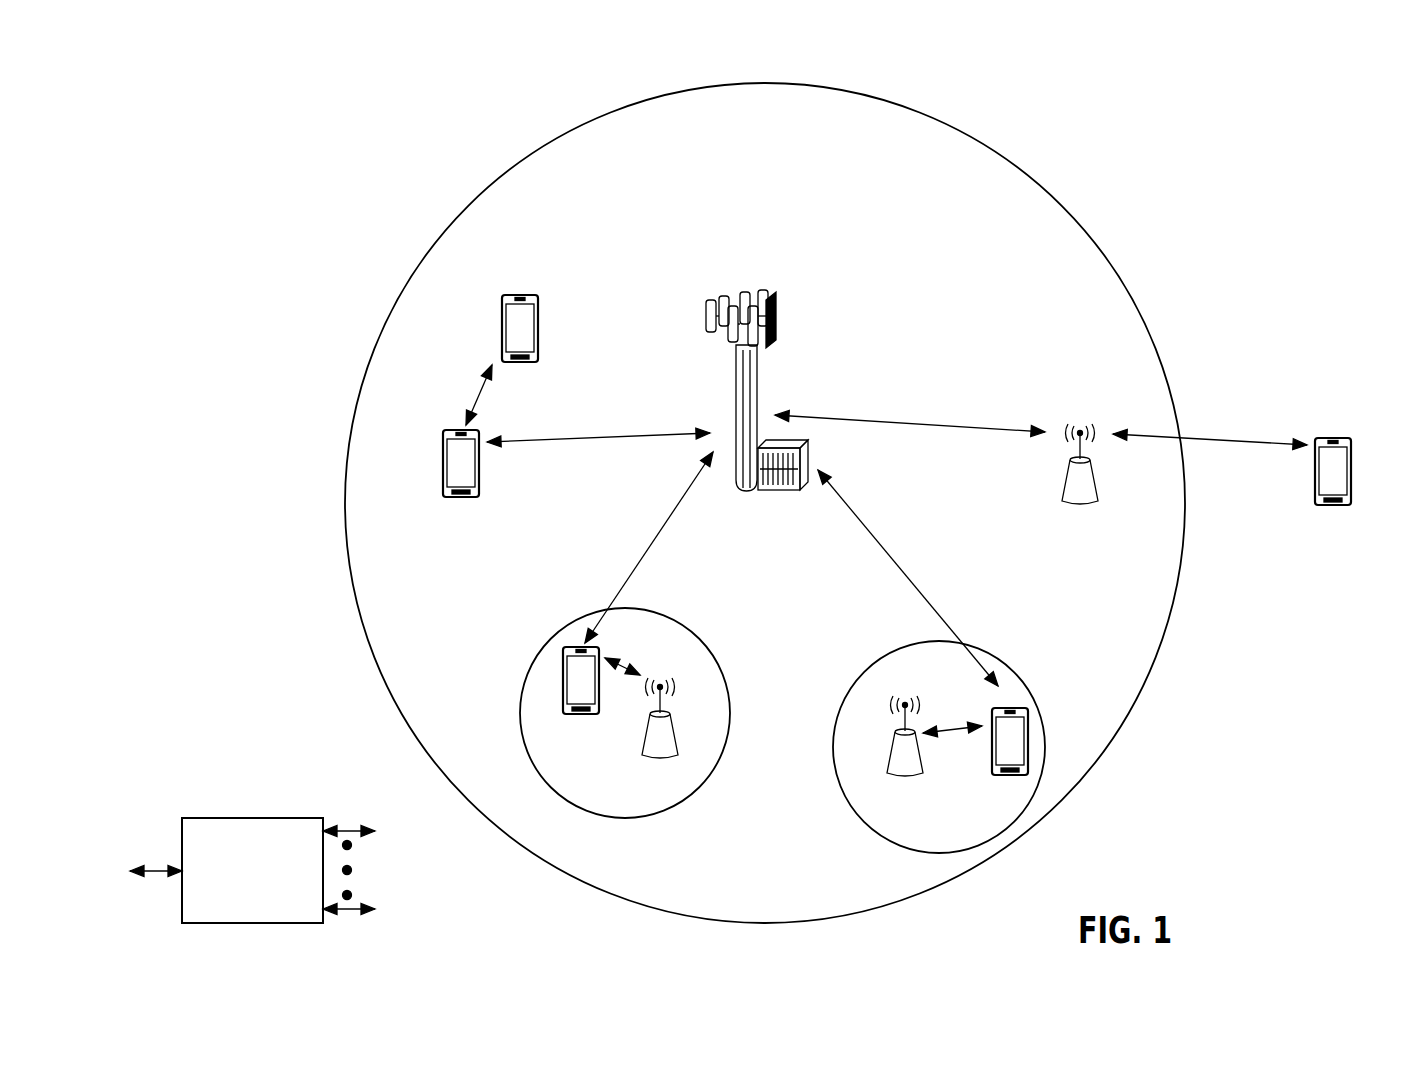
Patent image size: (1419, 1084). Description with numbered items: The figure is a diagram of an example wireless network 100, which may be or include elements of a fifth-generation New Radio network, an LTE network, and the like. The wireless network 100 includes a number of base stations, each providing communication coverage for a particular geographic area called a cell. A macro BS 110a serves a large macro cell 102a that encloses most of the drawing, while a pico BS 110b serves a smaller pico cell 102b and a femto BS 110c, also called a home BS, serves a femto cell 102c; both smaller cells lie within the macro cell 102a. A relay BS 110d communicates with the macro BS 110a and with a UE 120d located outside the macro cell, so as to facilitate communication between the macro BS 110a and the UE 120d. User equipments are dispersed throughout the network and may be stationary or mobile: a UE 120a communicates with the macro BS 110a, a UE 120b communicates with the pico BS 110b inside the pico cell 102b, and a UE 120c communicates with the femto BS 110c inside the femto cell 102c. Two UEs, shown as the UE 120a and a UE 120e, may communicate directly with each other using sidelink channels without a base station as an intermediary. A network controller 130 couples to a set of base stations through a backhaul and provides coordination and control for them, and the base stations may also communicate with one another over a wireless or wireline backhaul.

The wireless network 100 is at (238, 82).
The macro cell 102a is at (1040, 185).
The pico cell 102b is at (715, 648).
The femto cell 102c is at (878, 660).
The macro BS 110a is at (757, 282).
The pico BS 110b is at (683, 738).
The femto BS 110c is at (890, 767).
The relay BS 110d is at (1080, 425).
The UE 120a is at (443, 458).
The UE 120b is at (565, 717).
The UE 120c is at (992, 775).
The UE 120d is at (1343, 437).
The UE 120e is at (502, 315).
The network controller 130 is at (250, 817).